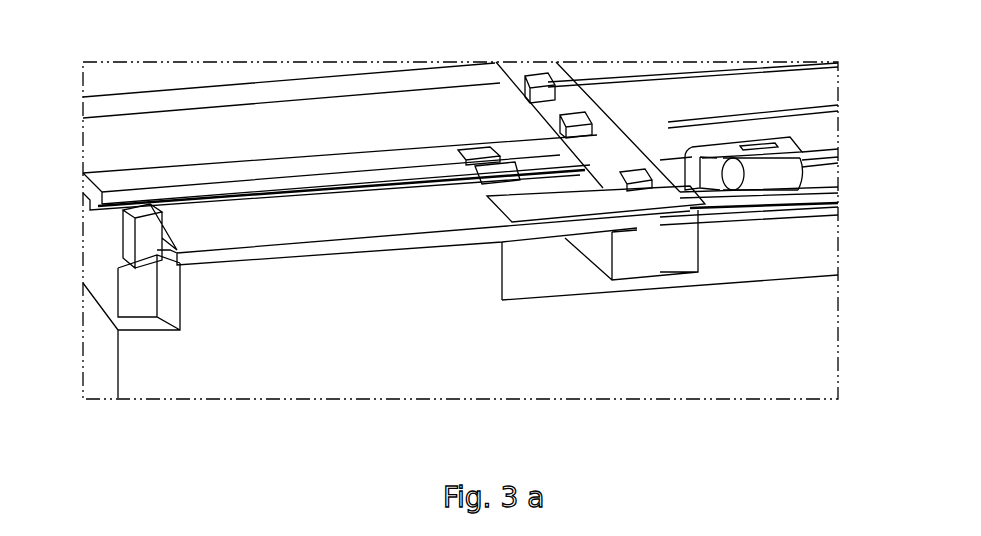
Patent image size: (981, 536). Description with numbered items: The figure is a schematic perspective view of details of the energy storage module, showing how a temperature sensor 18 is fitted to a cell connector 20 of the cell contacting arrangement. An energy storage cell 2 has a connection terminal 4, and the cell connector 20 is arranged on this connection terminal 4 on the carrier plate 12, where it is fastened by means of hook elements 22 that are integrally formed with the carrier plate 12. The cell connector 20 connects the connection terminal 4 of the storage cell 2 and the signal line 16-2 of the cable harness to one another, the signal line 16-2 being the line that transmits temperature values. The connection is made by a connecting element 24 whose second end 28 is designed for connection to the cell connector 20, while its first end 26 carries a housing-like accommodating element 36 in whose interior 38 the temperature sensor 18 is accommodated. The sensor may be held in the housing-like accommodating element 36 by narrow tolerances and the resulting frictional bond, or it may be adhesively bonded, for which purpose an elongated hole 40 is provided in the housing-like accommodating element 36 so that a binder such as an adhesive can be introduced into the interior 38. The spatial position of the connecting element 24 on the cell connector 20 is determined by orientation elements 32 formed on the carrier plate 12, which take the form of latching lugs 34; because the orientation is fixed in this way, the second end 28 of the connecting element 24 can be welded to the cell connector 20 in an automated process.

The energy storage cell 2 is at (100, 349).
The connection terminal 4 is at (328, 300).
The carrier plate 12 is at (666, 258).
The signal line 16-2 is at (838, 167).
The temperature sensor 18 is at (763, 178).
The cell connector 20 is at (298, 225).
The hook element 22 is at (120, 237).
The connecting element 24 is at (550, 178).
The first end 26 is at (803, 203).
The second end 28 is at (505, 207).
The orientation element 32 is at (633, 178).
The latching lug 34 is at (636, 180).
The housing-like accommodating element 36 is at (722, 150).
The interior 38 is at (713, 175).
The elongated hole 40 is at (768, 147).